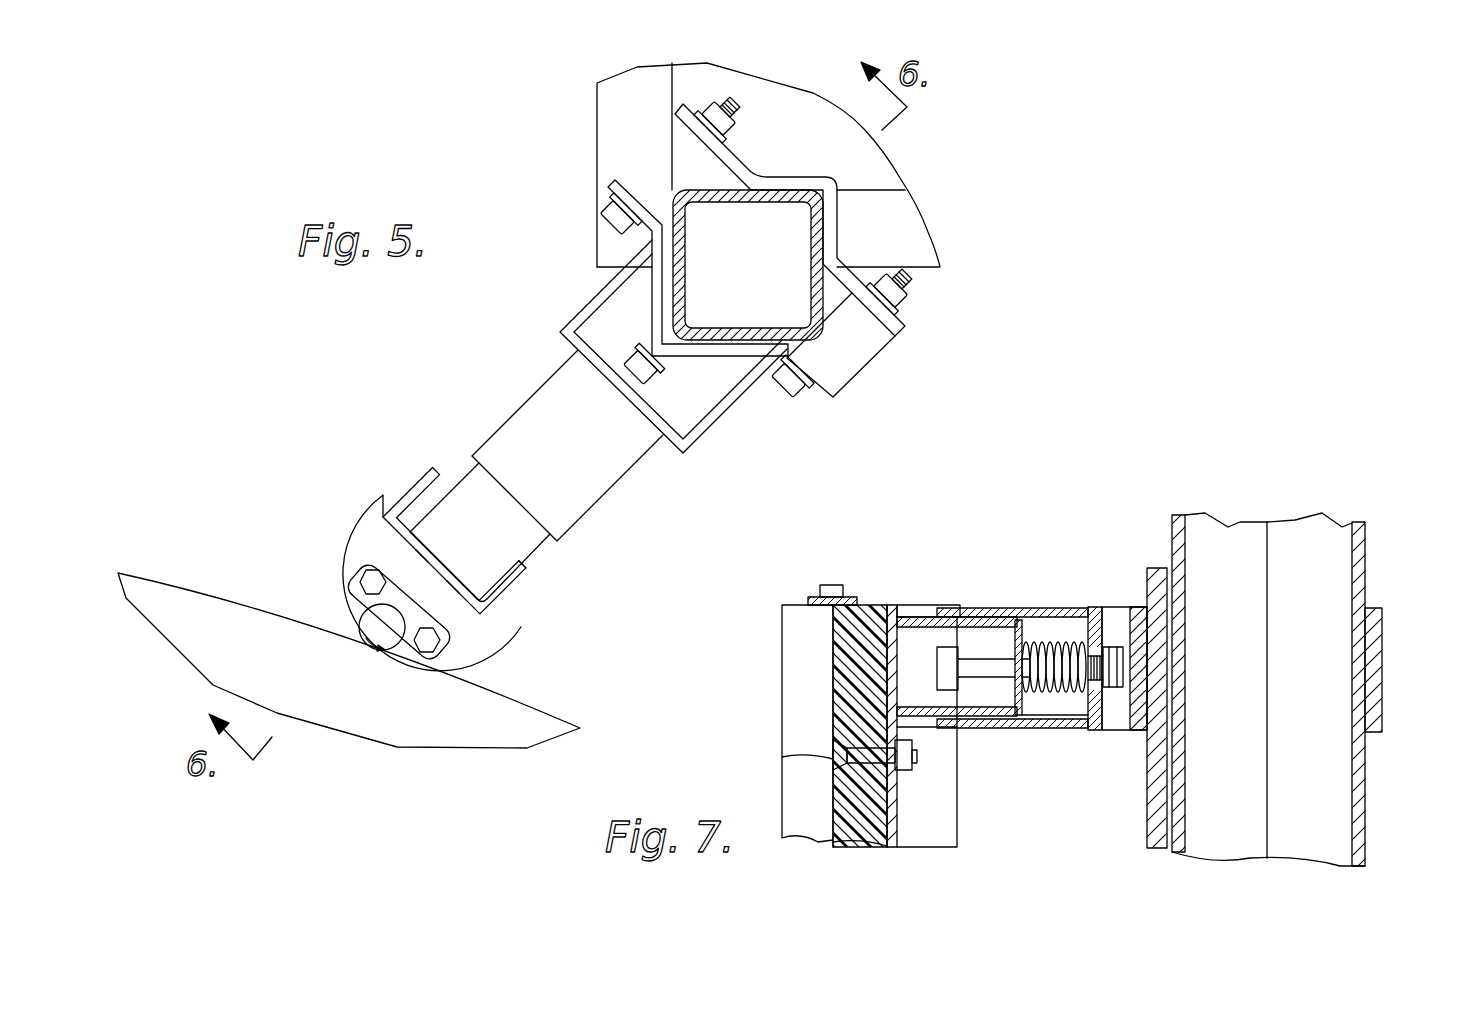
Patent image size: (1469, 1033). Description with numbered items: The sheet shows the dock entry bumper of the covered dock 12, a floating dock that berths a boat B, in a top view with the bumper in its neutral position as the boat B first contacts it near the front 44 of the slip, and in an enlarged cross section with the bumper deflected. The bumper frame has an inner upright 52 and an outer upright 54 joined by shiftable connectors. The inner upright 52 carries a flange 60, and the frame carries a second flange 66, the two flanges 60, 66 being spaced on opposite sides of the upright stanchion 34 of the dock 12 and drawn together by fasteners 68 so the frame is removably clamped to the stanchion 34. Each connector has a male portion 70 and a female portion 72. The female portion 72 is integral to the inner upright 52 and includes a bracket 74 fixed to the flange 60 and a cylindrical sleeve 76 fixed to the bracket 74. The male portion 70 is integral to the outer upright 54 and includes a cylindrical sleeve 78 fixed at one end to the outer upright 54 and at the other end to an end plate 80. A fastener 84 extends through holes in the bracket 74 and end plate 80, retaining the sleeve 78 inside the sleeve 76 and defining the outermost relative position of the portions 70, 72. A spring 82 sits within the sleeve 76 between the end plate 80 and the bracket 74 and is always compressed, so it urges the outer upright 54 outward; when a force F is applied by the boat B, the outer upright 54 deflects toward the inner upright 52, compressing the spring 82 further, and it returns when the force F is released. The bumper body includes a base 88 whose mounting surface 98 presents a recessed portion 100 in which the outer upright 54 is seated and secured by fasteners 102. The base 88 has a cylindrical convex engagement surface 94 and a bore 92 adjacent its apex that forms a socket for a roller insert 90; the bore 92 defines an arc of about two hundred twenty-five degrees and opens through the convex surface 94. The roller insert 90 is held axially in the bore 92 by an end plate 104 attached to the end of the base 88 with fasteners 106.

In FIG. 5, the covered dock 12 is at (905, 220).
In FIG. 5, the upright stanchion 34 is at (812, 220).
In FIG. 7, the upright stanchion 34 is at (1181, 608).
In FIG. 5, the front 44 is at (532, 350).
In FIG. 5, the inner upright 52 is at (714, 345).
In FIG. 7, the inner upright 52 is at (1158, 828).
In FIG. 5, the outer upright 54 is at (432, 474).
In FIG. 7, the outer upright 54 is at (909, 607).
In FIG. 5, the flange 60 is at (826, 400).
In FIG. 7, the flange 60 is at (1146, 688).
In FIG. 5, the flange 66 is at (908, 333).
In FIG. 7, the flange 66 is at (1383, 616).
In FIG. 5, the fastener 68 is at (842, 345).
In FIG. 5, the male portion 70 is at (530, 537).
In FIG. 7, the male portion 70 is at (933, 714).
In FIG. 5, the female portion 72 is at (603, 473).
In FIG. 7, the female portion 72 is at (974, 724).
In FIG. 5, the bracket 74 is at (722, 410).
In FIG. 7, the bracket 74 is at (1090, 610).
In FIG. 7, the cylindrical sleeve 76 is at (1078, 730).
In FIG. 7, the cylindrical sleeve 78 is at (964, 619).
In FIG. 7, the end plate 80 is at (1023, 626).
In FIG. 7, the spring 82 is at (1043, 694).
In FIG. 5, the fastener 84 is at (637, 358).
In FIG. 7, the fastener 84 is at (1019, 666).
In FIG. 5, the base 88 is at (488, 645).
In FIG. 5, the roller insert 90 is at (393, 662).
In FIG. 5, the bore 92 is at (359, 628).
In FIG. 5, the convex engagement surface 94 is at (360, 518).
In FIG. 5, the mounting surface 98 is at (492, 598).
In FIG. 5, the recessed portion 100 is at (395, 512).
In FIG. 7, the fastener 102 is at (838, 756).
In FIG. 5, the end plate 104 is at (432, 655).
In FIG. 5, the fastener 106 is at (363, 583).
In FIG. 5, the boat B is at (150, 592).
In FIG. 7, the force F is at (770, 661).